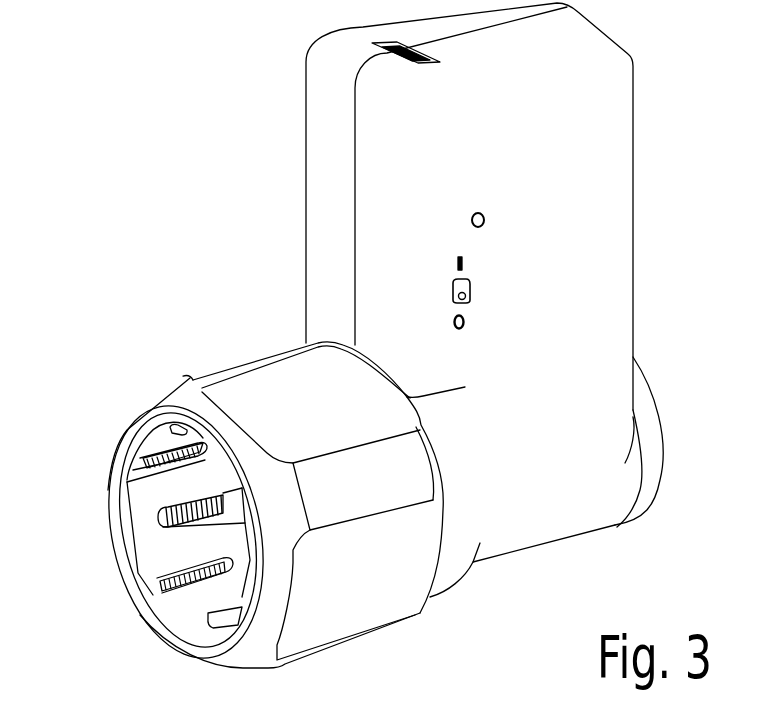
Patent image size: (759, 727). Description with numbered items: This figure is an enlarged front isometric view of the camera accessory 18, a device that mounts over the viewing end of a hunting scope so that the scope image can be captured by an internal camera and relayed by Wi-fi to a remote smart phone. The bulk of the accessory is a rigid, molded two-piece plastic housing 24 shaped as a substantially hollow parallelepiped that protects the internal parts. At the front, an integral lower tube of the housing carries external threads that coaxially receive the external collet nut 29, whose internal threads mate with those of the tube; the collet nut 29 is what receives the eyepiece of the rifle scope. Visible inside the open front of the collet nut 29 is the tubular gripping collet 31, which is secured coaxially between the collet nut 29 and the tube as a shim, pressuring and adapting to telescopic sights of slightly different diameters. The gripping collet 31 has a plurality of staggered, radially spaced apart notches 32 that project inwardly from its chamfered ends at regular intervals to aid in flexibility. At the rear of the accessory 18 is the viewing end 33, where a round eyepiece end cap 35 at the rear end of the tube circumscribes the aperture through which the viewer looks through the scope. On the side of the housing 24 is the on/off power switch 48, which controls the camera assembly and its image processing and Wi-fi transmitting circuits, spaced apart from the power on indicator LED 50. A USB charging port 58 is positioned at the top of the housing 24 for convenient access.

The camera accessory 18 is at (168, 208).
The housing 24 is at (597, 207).
The collet nut 29 is at (243, 378).
The gripping collet 31 is at (148, 500).
The notches 32 is at (150, 575).
The viewing end 33 is at (647, 370).
The eyepiece end cap 35 is at (647, 437).
The on/off power switch 48 is at (470, 302).
The power on indicator LED 50 is at (485, 225).
The USB charging port 58 is at (407, 60).